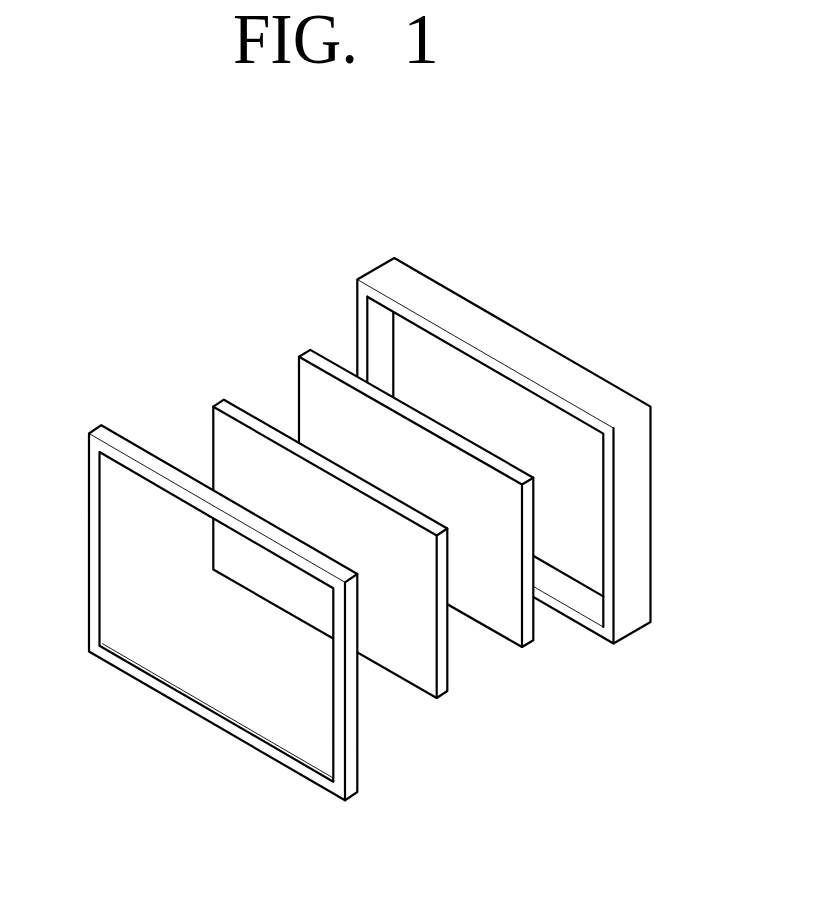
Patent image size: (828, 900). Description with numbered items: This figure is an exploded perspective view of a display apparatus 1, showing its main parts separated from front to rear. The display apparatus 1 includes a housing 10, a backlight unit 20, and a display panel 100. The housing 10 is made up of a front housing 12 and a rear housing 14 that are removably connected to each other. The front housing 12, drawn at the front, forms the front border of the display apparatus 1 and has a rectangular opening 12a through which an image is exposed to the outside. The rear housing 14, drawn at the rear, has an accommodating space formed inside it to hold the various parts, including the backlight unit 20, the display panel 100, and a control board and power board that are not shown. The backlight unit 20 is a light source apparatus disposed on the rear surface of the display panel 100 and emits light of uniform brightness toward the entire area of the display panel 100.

The display apparatus 1 is at (346, 170).
The housing 10 is at (288, 264).
The front housing 12 is at (223, 577).
The rectangular opening 12a is at (280, 728).
The rear housing 14 is at (364, 289).
The backlight unit 20 is at (527, 627).
The display panel 100 is at (442, 674).